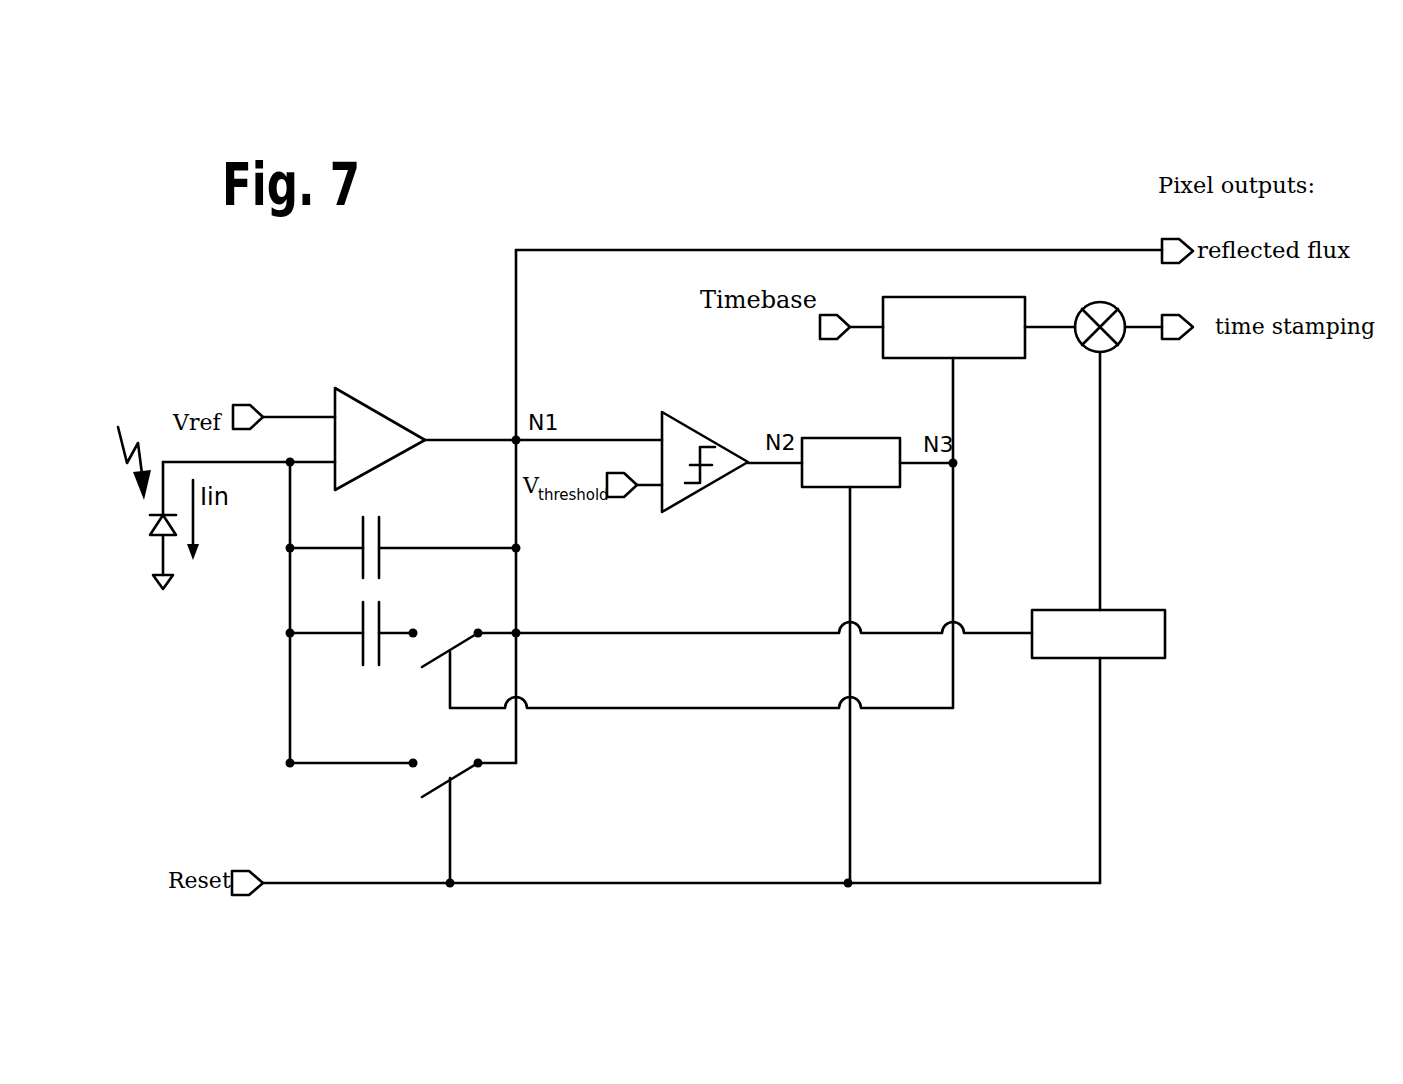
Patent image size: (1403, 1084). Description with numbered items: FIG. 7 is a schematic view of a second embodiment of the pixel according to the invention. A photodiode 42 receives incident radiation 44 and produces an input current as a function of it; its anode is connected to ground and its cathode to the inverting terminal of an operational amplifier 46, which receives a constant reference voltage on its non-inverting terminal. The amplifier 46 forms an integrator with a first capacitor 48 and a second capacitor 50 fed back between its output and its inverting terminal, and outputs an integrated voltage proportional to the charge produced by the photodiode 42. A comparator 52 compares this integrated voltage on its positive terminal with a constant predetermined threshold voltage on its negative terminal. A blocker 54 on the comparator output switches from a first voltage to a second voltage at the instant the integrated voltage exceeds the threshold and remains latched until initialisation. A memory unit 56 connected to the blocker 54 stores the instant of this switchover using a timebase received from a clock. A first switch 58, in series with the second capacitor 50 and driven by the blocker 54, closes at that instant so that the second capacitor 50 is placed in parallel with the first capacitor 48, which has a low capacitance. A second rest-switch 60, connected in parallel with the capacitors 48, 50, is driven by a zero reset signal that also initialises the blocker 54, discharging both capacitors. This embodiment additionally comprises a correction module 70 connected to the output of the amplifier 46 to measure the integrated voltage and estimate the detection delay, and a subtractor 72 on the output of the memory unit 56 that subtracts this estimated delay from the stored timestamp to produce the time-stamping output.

The photodiode 42 is at (157, 522).
The incident radiation 44 is at (112, 387).
The operational amplifier 46 is at (368, 403).
The first capacitor 48 is at (380, 530).
The second capacitor 50 is at (380, 617).
The comparator 52 is at (670, 415).
The blocker 54 is at (880, 486).
The memory unit 56 is at (1002, 362).
The first switch 58 is at (432, 668).
The second rest-switch 60 is at (430, 797).
The correction module 70 is at (1037, 652).
The subtractor 72 is at (1098, 302).